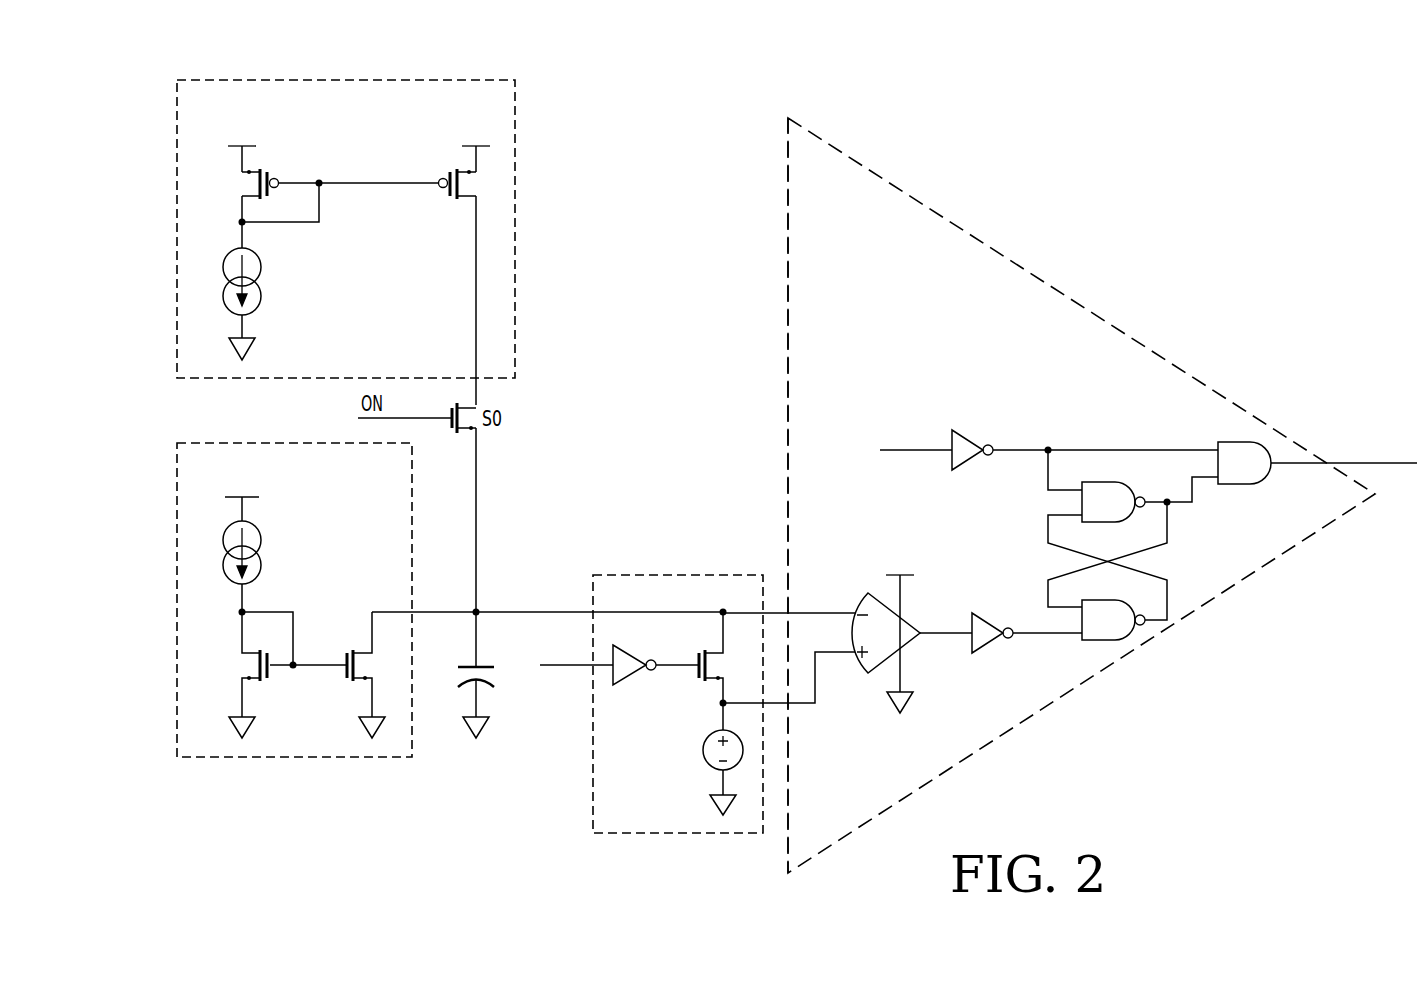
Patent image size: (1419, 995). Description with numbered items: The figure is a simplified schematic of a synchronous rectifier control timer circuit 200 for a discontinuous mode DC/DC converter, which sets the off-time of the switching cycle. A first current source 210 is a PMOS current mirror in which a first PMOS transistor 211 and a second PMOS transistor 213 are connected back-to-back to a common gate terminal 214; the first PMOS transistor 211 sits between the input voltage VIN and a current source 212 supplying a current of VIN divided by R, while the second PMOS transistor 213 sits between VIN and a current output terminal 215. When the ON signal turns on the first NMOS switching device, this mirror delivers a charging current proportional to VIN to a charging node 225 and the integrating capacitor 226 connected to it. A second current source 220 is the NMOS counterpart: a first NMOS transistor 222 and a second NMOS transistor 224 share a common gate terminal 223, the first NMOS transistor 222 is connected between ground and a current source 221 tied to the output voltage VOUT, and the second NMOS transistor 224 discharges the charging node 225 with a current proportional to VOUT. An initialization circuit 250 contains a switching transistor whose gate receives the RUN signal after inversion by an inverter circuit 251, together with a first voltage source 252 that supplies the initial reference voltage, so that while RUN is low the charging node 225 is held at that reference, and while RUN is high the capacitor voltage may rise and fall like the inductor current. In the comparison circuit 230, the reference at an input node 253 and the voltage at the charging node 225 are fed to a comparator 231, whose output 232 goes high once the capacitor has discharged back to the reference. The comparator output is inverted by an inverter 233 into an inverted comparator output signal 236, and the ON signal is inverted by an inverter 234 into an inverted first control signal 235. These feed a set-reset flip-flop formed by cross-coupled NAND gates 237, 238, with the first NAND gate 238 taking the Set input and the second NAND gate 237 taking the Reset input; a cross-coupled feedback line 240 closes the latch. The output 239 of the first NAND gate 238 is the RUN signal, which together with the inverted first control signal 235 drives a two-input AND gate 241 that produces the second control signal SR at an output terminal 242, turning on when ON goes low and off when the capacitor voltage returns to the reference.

The synchronous rectifier control timer circuit 200 is at (1192, 178).
The first current source 210 is at (515, 102).
The first PMOS transistor 211 is at (263, 168).
The current source 212 is at (230, 256).
The second PMOS transistor 213 is at (452, 170).
The common gate terminal 214 is at (319, 178).
The current output terminal 215 is at (476, 280).
The second current source 220 is at (413, 521).
The current source 221 is at (262, 540).
The first NMOS transistor 222 is at (267, 682).
The common gate terminal 223 is at (296, 661).
The second NMOS transistor 224 is at (350, 682).
The charging node 225 is at (472, 608).
The C1 integrating capacitor 226 is at (490, 665).
The comparison circuit 230 is at (788, 282).
The comparator 231 is at (855, 604).
The comparator output 232 is at (945, 631).
The inverter 233 is at (987, 622).
The inverter 234 is at (968, 438).
The inverted first control signal 235 is at (1050, 445).
The inverted comparator output signal 236 is at (1043, 636).
The second NAND gate 237 is at (1095, 600).
The first NAND gate 238 is at (1115, 482).
The output of first NAND gate 239 is at (1170, 520).
The feedback line 240 is at (1168, 592).
The two-input AND gate 241 is at (1240, 486).
The output terminal 242 is at (1292, 466).
The initialization circuit 250 is at (660, 575).
The inverter 251 is at (626, 677).
The first voltage source 252 is at (707, 747).
The input reference voltage node 253 is at (718, 706).